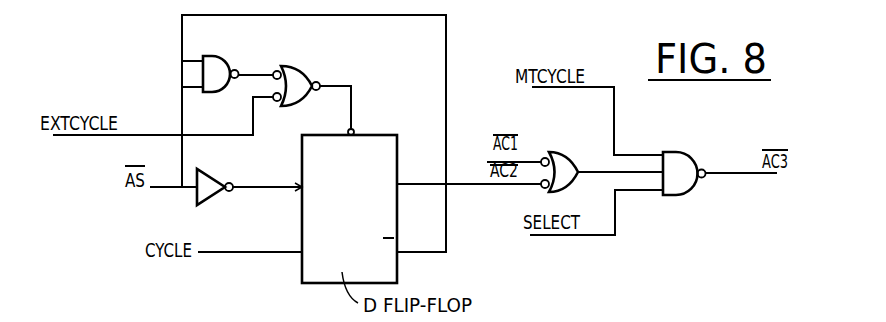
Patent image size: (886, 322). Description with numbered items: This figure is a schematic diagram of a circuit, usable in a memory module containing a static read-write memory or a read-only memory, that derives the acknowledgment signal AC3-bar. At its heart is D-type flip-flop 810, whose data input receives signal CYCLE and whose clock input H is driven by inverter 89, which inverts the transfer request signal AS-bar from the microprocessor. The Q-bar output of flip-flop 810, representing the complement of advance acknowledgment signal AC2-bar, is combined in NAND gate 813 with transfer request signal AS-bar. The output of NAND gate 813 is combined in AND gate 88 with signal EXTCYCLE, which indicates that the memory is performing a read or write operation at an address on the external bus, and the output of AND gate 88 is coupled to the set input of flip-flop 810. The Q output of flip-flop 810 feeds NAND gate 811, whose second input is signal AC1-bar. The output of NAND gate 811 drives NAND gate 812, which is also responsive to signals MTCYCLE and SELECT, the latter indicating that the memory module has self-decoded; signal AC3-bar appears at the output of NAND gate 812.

The NAND gate 813 is at (218, 67).
The AND gate 88 is at (300, 80).
The inverter 89 is at (205, 180).
The D-type flip-flop 810 is at (382, 147).
The NAND gate 811 is at (566, 165).
The NAND gate 812 is at (675, 162).